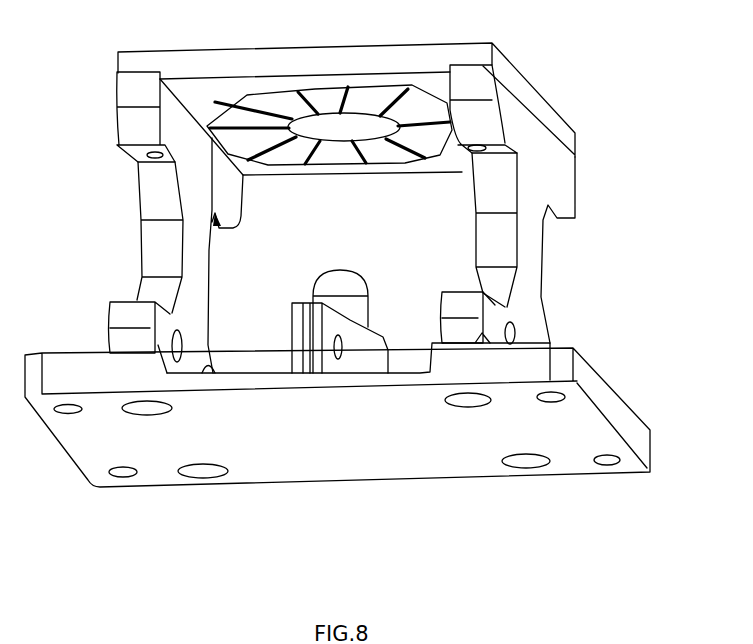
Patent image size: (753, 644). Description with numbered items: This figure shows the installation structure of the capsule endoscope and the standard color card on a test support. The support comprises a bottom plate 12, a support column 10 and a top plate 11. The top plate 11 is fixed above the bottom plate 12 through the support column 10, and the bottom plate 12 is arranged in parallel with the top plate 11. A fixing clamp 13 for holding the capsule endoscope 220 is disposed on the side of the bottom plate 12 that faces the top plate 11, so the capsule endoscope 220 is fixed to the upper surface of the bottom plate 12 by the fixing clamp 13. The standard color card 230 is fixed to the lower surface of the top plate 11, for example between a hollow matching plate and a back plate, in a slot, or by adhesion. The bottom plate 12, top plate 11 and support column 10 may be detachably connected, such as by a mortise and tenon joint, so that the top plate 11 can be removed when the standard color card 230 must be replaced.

The support column 10 is at (512, 128).
The top plate 11 is at (318, 44).
The bottom plate 12 is at (618, 393).
The fixing clamp 13 is at (292, 341).
The capsule endoscope 220 is at (380, 288).
The standard color card 230 is at (230, 124).